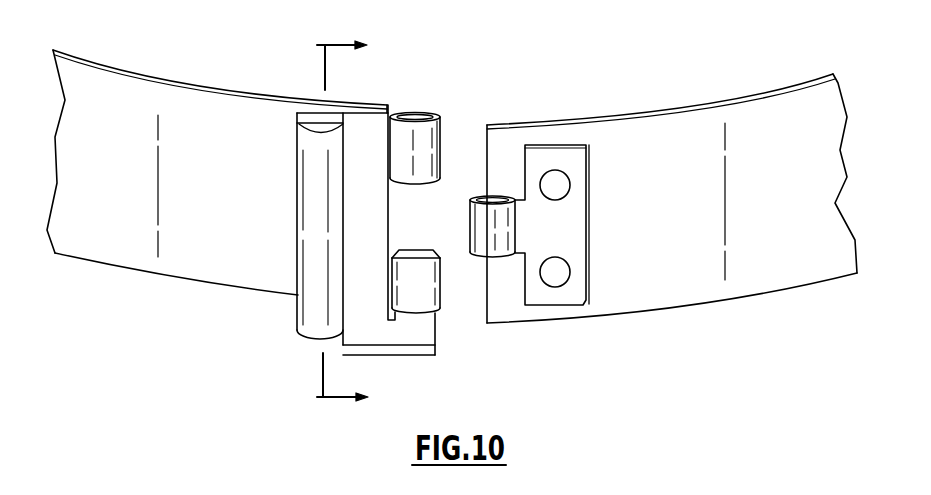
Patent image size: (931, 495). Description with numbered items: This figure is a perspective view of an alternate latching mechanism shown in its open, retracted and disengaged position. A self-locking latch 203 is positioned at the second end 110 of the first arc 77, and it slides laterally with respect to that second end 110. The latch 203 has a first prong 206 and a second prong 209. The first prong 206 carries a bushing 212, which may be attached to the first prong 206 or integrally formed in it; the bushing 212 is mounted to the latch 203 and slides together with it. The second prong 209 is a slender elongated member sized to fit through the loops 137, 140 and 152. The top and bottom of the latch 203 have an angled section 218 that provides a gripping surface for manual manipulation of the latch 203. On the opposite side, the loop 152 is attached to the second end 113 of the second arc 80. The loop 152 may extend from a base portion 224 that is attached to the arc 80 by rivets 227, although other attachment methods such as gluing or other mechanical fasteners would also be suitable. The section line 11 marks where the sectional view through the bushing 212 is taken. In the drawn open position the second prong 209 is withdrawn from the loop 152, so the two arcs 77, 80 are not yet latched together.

The first arc 77 is at (122, 74).
The second arc 80 is at (762, 98).
The second end of the first arc 110 is at (290, 69).
The section line 11- 11 is at (357, 221).
The self-locking latch 203 is at (300, 364).
The bushing 212 is at (310, 270).
The first prong 206 is at (373, 138).
The loop 140 is at (417, 273).
The second prong 209 is at (422, 318).
The angled section 218 is at (413, 353).
The second end of the second arc 113 is at (536, 114).
The loop 152 is at (497, 230).
The rivets 227 is at (563, 177).
The base portion 224 is at (560, 297).
The loop 137 is at (425, 160).